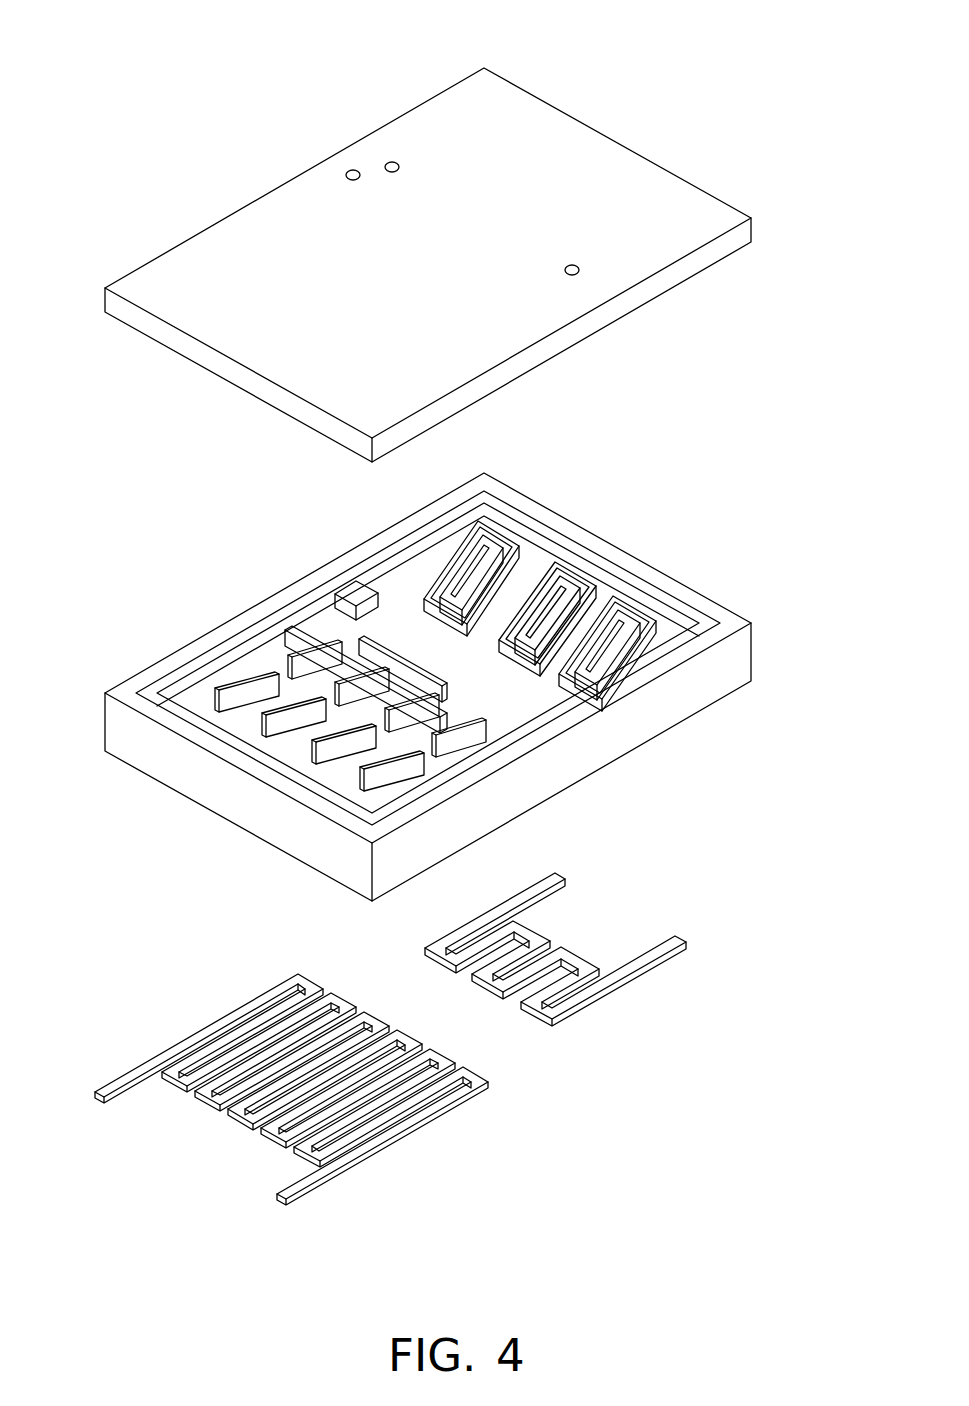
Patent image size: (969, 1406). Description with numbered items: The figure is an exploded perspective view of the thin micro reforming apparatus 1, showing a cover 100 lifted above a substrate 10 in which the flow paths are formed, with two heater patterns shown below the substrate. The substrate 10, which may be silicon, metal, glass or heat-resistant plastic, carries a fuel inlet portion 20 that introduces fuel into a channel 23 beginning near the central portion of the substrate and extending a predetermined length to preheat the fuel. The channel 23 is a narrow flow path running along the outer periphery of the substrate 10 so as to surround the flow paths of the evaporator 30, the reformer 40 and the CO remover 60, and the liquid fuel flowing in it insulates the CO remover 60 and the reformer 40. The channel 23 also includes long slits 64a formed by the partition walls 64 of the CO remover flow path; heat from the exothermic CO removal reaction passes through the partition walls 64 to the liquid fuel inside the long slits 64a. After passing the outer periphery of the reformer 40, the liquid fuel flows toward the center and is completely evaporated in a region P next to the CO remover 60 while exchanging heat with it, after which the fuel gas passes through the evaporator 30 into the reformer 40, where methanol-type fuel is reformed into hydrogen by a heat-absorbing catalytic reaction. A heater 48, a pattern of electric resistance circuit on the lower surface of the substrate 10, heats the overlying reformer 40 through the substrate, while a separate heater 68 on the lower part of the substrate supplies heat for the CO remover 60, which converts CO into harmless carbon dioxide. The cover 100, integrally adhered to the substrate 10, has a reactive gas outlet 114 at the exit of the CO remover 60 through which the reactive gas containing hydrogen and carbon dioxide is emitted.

The thin micro reforming apparatus 1 is at (717, 473).
The substrate 10 is at (723, 677).
The fuel inlet portion 20 is at (281, 556).
The channel 23 is at (290, 775).
The evaporator 30 is at (463, 714).
The reformer 40 is at (213, 698).
The heater 48 is at (403, 1153).
The CO remover 60 is at (507, 548).
The partition walls 64 is at (637, 631).
The long slits 64a is at (620, 625).
The heater 68 is at (632, 975).
The cover 100 is at (525, 143).
The reactive gas outlet 114 is at (392, 160).
The region P is at (433, 622).